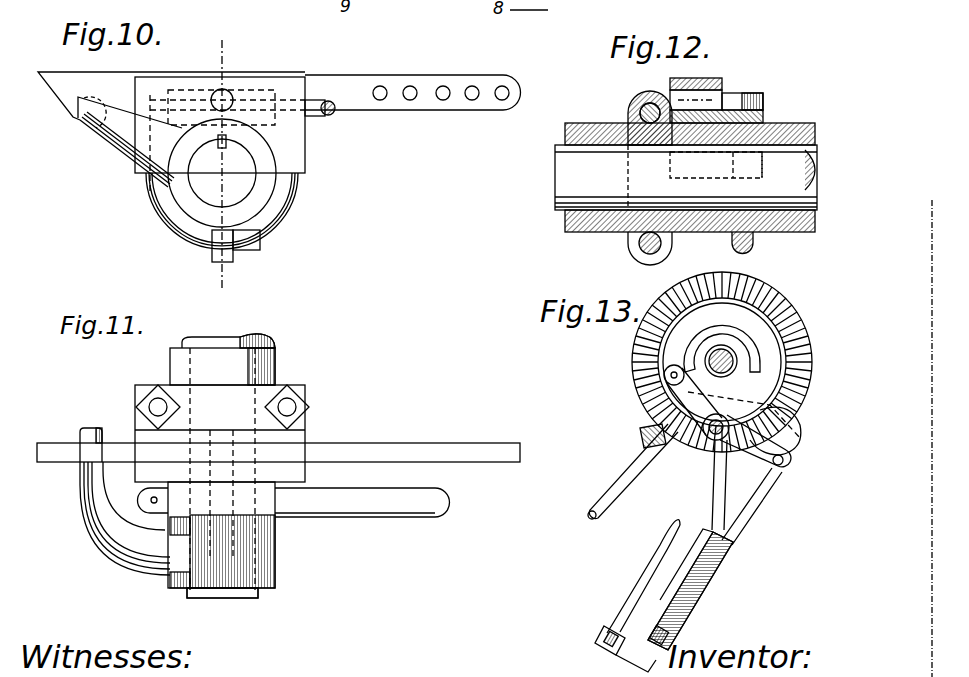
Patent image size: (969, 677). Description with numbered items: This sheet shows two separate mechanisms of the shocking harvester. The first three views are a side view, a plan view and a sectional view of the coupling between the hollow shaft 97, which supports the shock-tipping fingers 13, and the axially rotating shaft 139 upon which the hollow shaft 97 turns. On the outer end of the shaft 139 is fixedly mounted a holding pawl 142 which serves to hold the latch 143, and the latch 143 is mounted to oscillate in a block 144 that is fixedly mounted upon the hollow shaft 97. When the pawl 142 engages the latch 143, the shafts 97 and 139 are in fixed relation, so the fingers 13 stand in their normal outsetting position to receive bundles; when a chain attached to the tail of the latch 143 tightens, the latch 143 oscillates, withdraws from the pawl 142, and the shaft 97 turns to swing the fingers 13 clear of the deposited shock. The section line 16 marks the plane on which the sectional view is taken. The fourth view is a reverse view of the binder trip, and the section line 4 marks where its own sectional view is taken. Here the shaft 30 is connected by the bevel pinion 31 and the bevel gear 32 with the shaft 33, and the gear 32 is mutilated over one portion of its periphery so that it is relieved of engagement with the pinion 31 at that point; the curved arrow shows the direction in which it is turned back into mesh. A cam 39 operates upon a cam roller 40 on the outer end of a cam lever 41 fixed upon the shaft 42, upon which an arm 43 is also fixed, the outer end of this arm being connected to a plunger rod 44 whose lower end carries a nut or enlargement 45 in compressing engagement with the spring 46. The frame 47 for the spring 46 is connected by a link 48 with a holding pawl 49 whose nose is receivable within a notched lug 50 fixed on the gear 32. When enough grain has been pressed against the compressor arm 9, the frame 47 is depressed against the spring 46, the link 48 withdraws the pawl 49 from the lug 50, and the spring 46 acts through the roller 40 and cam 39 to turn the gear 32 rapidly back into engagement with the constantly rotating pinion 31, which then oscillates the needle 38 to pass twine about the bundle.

In FIG. 13, the section line 4 4 is at (636, 318).
In FIG. 13, the compressor arm 9 is at (652, 582).
In FIG. 10, the fingers 13 is at (318, 112).
In FIG. 11, the fingers 13 is at (440, 503).
In FIG. 12, the fingers 13 is at (641, 104).
In FIG. 10, the spur gear 16 is at (212, 55).
In FIG. 13, the shaft 30 is at (625, 462).
In FIG. 13, the bevel pinion 31 is at (655, 424).
In FIG. 13, the bevel gear 32 is at (660, 332).
In FIG. 13, the shaft 33 is at (728, 352).
In FIG. 13, the needle 38 is at (740, 284).
In FIG. 13, the cam 39 is at (686, 356).
In FIG. 13, the cam roller 40 is at (642, 378).
In FIG. 13, the cam lever 41 is at (700, 378).
In FIG. 13, the shaft 42 is at (700, 448).
In FIG. 13, the arm 43 is at (775, 468).
In FIG. 13, the plunger rod 44 is at (746, 518).
In FIG. 13, the nut or enlargement 45 is at (690, 636).
In FIG. 13, the spring 46 is at (728, 575).
In FIG. 13, the spring frame 47 is at (707, 545).
In FIG. 13, the link 48 is at (725, 487).
In FIG. 13, the holding pawl 49 is at (783, 462).
In FIG. 13, the notched lug 50 is at (792, 428).
In FIG. 10, the hollow shaft 97 is at (242, 163).
In FIG. 11, the hollow shaft 97 is at (172, 365).
In FIG. 12, the hollow shaft 97 is at (795, 215).
In FIG. 10, the axially rotating shaft 139 is at (232, 185).
In FIG. 11, the axially rotating shaft 139 is at (240, 598).
In FIG. 12, the axially rotating shaft 139 is at (592, 178).
In FIG. 10, the holding pawl 142 is at (112, 125).
In FIG. 11, the holding pawl 142 is at (95, 505).
In FIG. 12, the holding pawl 142 is at (565, 130).
In FIG. 10, the latch 143 is at (58, 94).
In FIG. 11, the latch 143 is at (52, 440).
In FIG. 12, the latch 143 is at (698, 80).
In FIG. 10, the block 144 is at (355, 64).
In FIG. 11, the block 144 is at (295, 393).
In FIG. 12, the block 144 is at (763, 120).